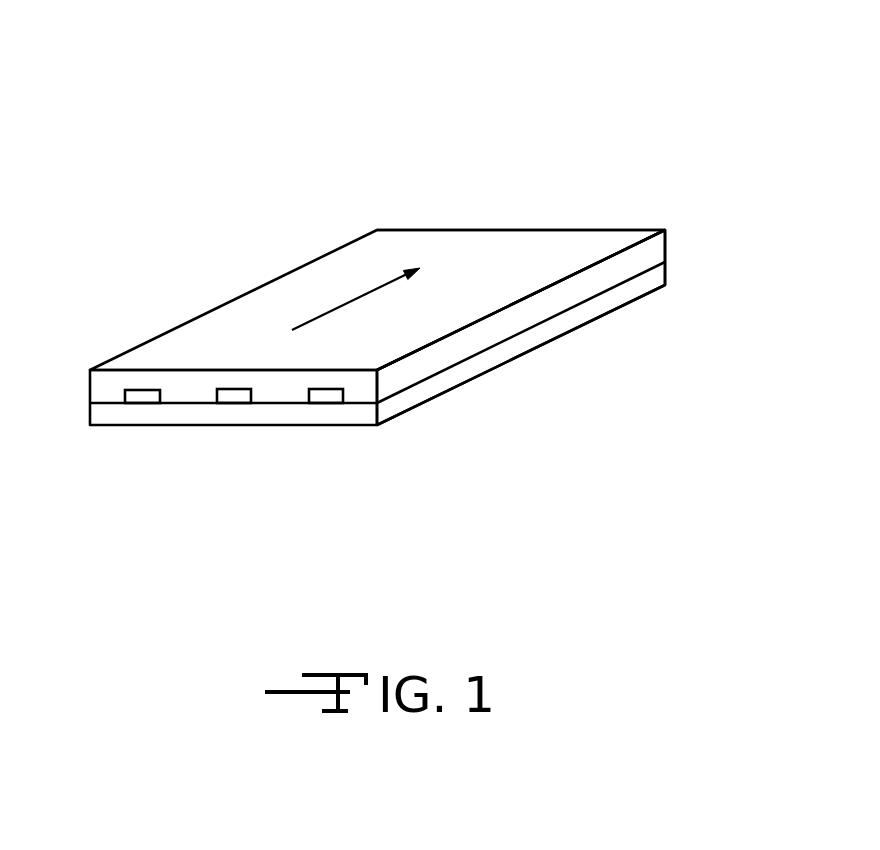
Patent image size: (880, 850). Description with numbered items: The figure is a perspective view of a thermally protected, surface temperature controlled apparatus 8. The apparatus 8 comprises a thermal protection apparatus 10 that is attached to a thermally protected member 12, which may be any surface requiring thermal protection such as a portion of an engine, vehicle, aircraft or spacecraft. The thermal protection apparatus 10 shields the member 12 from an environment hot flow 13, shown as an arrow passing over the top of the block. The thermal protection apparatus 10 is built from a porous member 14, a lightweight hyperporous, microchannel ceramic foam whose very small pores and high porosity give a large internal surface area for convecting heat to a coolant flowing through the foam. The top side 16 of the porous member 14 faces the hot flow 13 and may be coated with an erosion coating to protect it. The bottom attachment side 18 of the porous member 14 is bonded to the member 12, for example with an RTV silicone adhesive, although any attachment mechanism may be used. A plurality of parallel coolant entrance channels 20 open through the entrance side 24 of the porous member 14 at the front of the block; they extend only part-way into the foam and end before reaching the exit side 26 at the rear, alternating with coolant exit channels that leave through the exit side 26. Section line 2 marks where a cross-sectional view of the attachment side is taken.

The thermally protected, surface temperature controlled apparatus 8 is at (681, 68).
The thermal protection apparatus 10 is at (653, 261).
The thermally protected member 12 is at (515, 360).
The environment hot flow 13 is at (327, 310).
The porous member 14 is at (503, 328).
The top side 16 is at (183, 345).
The attachment side 18 is at (625, 283).
The coolant entrance channels 20 is at (138, 398).
The entrance side 24 is at (110, 402).
The exit side 26 is at (402, 228).
The section line 2- 2 is at (52, 370).